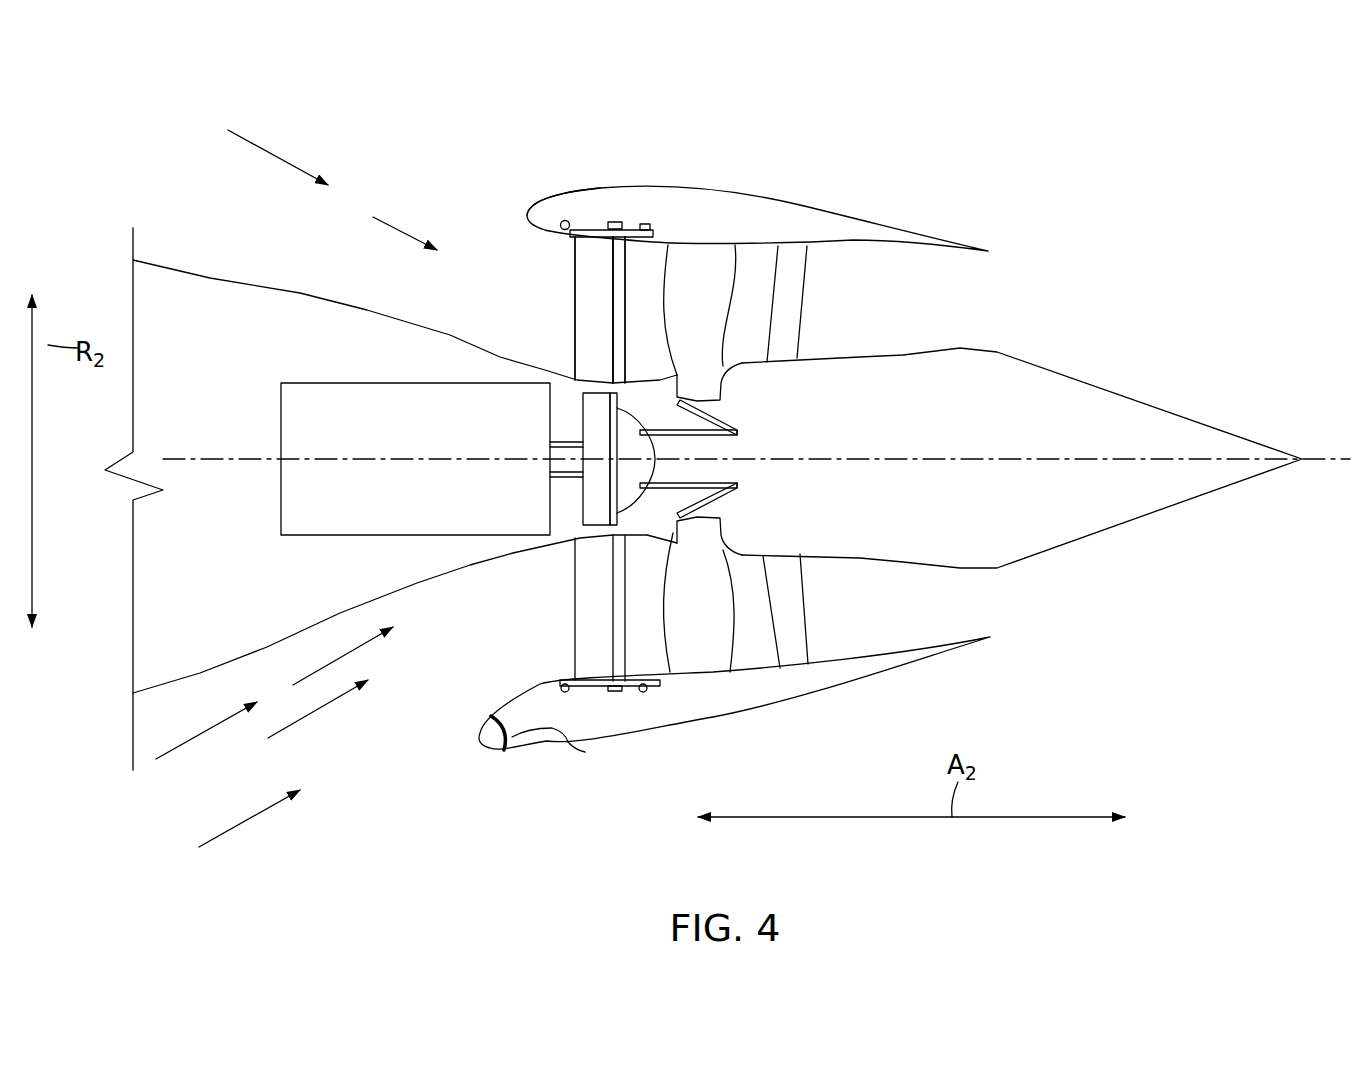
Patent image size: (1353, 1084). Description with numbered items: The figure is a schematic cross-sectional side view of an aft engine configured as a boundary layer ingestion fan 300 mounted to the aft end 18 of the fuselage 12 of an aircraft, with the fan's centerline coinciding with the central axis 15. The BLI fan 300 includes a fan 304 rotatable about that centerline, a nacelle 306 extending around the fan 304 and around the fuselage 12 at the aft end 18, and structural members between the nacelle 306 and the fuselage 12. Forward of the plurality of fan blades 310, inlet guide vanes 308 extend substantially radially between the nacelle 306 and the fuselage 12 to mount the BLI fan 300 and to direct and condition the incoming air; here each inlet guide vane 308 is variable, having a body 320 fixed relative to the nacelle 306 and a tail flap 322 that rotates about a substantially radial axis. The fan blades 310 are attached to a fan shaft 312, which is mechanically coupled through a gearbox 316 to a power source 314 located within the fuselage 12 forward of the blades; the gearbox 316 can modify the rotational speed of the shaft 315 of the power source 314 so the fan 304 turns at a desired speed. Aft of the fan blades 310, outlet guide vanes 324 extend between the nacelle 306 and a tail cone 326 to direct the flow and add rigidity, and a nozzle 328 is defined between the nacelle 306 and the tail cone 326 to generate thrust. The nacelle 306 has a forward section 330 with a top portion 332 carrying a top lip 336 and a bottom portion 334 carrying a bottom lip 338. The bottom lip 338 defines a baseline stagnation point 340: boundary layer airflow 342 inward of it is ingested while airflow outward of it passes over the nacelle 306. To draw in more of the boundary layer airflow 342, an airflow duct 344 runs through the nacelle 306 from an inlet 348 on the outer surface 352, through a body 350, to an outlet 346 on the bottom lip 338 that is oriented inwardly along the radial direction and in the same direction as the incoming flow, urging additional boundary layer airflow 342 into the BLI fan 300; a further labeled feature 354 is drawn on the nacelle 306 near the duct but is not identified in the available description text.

The fuselage 12 is at (207, 278).
The central axis 15 is at (1022, 458).
The aft end 18 is at (263, 275).
The boundary layer ingestion (BLI) fan 300 is at (1122, 113).
The fan 304 is at (707, 273).
The nacelle 306 is at (750, 186).
The inlet guide vanes 308 is at (577, 268).
The fan blades 310 is at (713, 297).
The fan shaft 312 is at (723, 438).
The power source 314 is at (355, 383).
The shaft 315 is at (570, 440).
The gearbox 316 is at (580, 403).
The body 320 is at (592, 262).
The tail flap 322 is at (625, 278).
The outlet guide vanes 324 is at (793, 601).
The tail cone 326 is at (1153, 398).
The nozzle 328 is at (1020, 296).
The forward section 330 is at (558, 763).
The top portion 332 is at (543, 182).
The bottom portion 334 is at (478, 777).
The top lip 336 is at (528, 208).
The bottom lip 338 is at (477, 723).
The baseline stagnation point 340 is at (470, 738).
The boundary layer airflow 342 is at (289, 128).
The airflow duct 344 is at (532, 718).
The outlet 346 is at (498, 703).
The inlet 348 is at (505, 757).
The body 350 is at (567, 738).
The outer surface 352 is at (782, 720).
The nacelle inner surface 354 is at (767, 660).